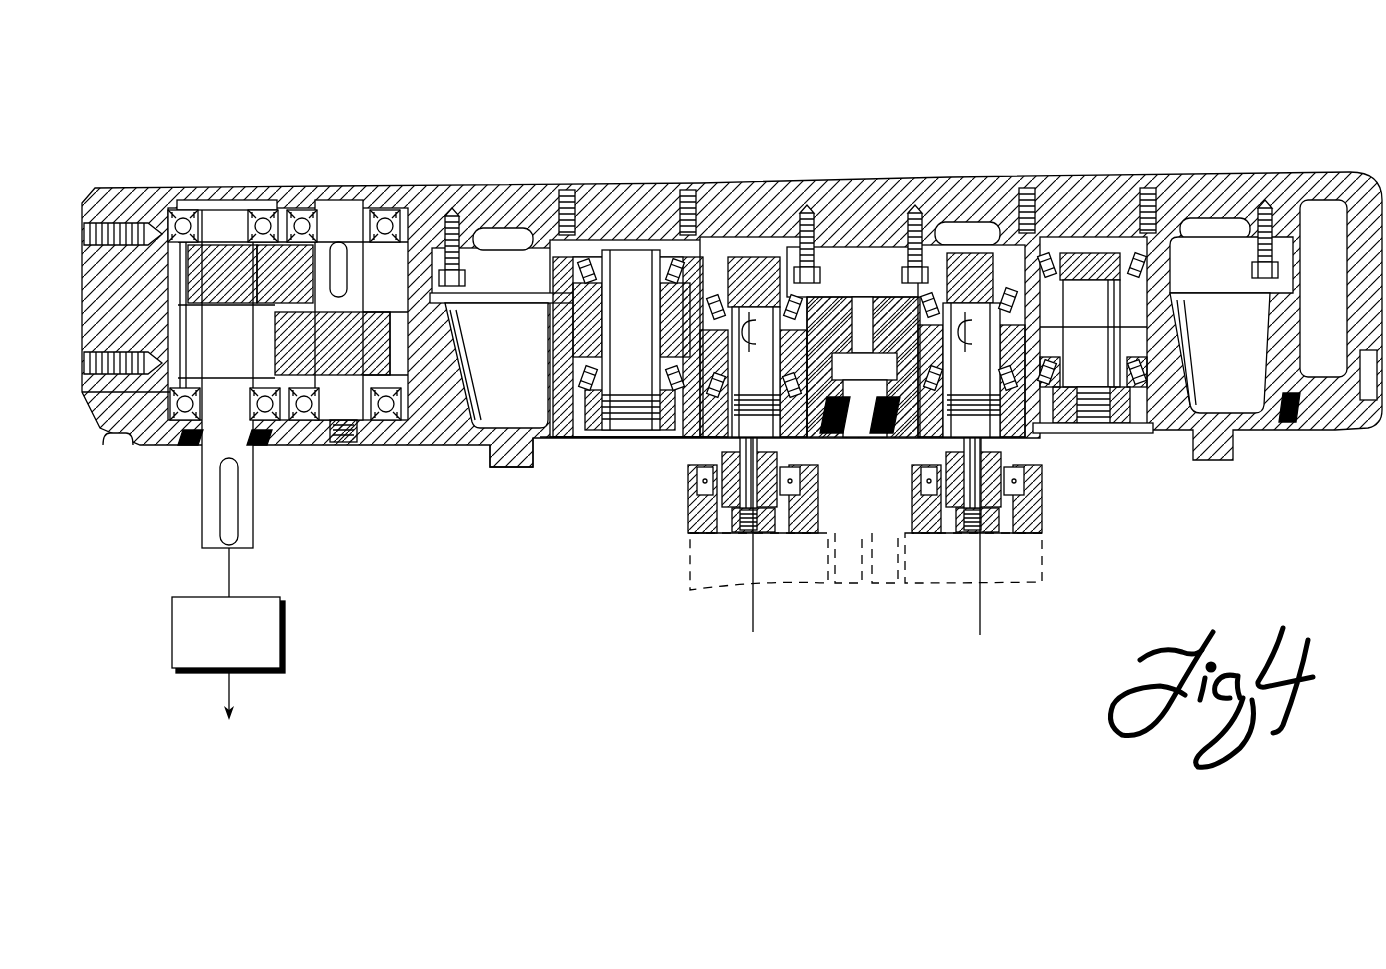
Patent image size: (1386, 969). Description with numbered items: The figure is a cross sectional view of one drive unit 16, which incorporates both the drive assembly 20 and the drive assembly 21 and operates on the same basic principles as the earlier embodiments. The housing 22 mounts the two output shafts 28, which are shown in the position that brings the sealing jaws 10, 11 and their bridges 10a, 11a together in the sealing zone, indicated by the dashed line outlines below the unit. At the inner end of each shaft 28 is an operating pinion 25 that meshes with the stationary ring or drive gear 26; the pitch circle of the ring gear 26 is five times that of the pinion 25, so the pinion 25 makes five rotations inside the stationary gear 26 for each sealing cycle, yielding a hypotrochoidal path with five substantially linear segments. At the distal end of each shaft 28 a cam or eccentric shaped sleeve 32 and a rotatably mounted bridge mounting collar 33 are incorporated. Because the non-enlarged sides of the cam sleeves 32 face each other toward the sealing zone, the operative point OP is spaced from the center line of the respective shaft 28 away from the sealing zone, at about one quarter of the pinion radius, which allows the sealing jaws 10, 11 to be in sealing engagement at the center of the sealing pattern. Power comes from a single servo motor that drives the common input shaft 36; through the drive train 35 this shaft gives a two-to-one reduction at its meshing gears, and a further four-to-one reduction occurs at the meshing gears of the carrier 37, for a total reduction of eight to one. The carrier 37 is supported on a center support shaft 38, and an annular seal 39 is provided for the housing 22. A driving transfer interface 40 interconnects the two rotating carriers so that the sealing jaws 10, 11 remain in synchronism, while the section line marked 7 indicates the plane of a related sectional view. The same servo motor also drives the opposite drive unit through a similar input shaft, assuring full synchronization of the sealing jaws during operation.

The drive unit 16 is at (868, 66).
The drive train 35 is at (356, 140).
The common input shaft 36 is at (248, 527).
The housing 22 is at (470, 197).
The stationary ring or drive gear 26 is at (458, 205).
The center support shaft 38 is at (622, 297).
The operating pinion 25 is at (756, 200).
The driving transfer interface 40 is at (861, 266).
The carrier 37 is at (562, 445).
The annular seal 39 is at (427, 443).
The drive assembly 20 is at (559, 556).
The drive assembly 21 is at (1241, 492).
The section line 7 is at (427, 155).
The output shaft 28 is at (745, 462).
The cam or eccentric shaped sleeve 32 is at (973, 463).
The rotatably mounted bridge mounting collar 33 is at (800, 505).
The operative point OP is at (750, 612).
The sealing bridge 10a is at (806, 572).
The sealing jaw 10 is at (853, 572).
The sealing jaw 11 is at (893, 575).
The sealing bridge 11a is at (943, 572).